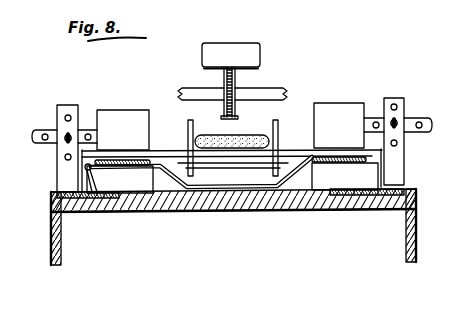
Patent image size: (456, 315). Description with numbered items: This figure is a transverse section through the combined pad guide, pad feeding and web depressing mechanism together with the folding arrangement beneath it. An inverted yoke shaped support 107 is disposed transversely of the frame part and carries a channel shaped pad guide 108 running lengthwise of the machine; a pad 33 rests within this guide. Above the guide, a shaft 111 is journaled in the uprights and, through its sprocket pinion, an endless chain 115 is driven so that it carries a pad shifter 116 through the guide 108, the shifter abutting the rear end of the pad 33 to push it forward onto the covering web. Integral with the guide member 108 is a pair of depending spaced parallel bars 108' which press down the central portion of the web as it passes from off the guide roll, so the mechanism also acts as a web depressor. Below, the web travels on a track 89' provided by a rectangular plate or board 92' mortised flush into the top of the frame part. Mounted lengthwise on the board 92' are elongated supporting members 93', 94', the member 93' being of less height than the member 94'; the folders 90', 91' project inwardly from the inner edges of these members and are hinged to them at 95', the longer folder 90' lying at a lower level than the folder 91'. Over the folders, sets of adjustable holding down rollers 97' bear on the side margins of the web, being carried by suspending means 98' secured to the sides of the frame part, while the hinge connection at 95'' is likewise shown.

The pad shifter 116 is at (230, 58).
The shaft 111 is at (187, 97).
The endless chain 115 is at (235, 83).
The pad guide 108 is at (251, 103).
The pad 33 is at (278, 93).
The holding down rollers 97' is at (241, 106).
The hinge 95' is at (406, 102).
The suspending means 98' is at (232, 147).
The inverted yoke shaped support 107 is at (292, 148).
The folder 91' is at (233, 209).
The folder 90' is at (237, 203).
The plate or board 92' is at (233, 227).
The depending bars 108' is at (201, 216).
The track 89' is at (334, 203).
The supporting member 93' is at (126, 210).
The supporting member 94' is at (345, 210).
The pivot link 95'' is at (102, 209).